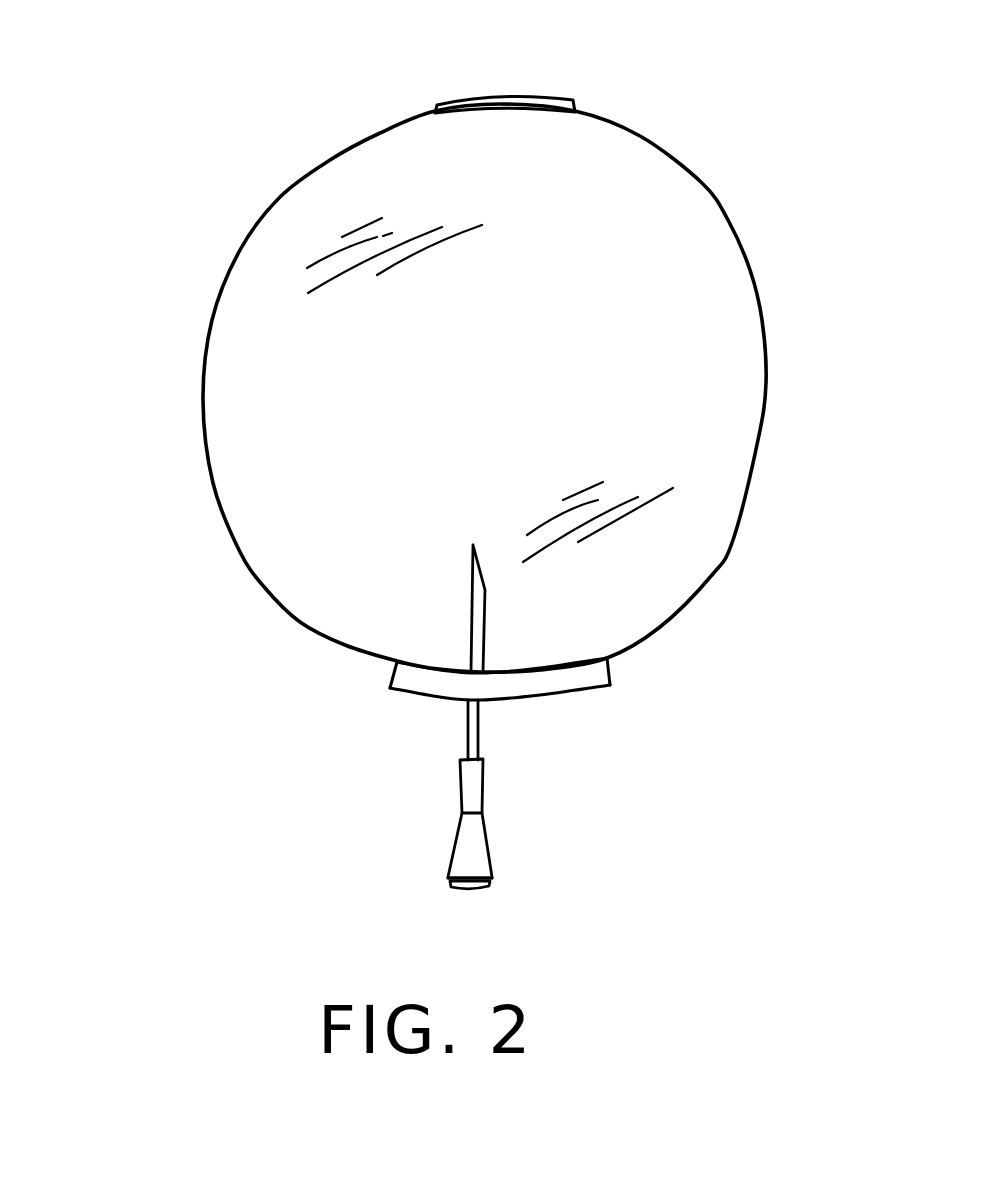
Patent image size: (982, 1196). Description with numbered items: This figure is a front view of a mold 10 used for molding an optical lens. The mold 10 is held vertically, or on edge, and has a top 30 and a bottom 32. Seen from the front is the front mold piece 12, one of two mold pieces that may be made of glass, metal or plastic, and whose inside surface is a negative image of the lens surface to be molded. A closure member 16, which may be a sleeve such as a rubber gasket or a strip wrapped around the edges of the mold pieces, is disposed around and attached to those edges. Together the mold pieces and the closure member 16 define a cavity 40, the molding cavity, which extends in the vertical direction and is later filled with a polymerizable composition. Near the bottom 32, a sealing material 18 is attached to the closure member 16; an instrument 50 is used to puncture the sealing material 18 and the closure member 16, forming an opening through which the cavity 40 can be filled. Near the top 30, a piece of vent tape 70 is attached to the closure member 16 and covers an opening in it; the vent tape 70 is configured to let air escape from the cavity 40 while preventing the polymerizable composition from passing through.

The mold 10 is at (481, 462).
The front mold piece 12 is at (248, 533).
The closure member 16 is at (712, 575).
The sealing material 18 is at (553, 700).
The top 30 is at (604, 56).
The bottom 32 is at (535, 734).
The cavity 40 is at (657, 298).
The instrument 50 is at (463, 723).
The vent tape 70 is at (560, 100).